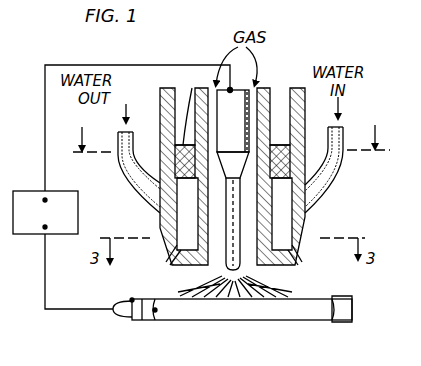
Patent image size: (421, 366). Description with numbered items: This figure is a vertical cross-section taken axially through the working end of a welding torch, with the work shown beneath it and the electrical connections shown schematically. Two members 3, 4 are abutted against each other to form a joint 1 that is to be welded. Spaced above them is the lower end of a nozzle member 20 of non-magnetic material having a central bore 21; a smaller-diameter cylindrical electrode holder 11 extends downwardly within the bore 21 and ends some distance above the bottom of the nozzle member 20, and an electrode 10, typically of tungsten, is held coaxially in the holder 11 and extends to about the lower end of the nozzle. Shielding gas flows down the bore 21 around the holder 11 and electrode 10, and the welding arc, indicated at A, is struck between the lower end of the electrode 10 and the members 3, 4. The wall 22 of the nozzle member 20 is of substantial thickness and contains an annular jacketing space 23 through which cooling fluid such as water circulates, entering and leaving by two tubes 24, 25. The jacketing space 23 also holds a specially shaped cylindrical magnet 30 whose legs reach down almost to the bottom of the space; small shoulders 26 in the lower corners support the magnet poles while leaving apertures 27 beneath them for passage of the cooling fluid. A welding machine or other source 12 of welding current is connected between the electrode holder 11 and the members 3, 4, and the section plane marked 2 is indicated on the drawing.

The joint 1 is at (333, 323).
The section line 2- 2 is at (226, 137).
The member 3 is at (245, 321).
The member 4 is at (143, 321).
The electrode 10 is at (227, 220).
The electrode holder 11 is at (235, 135).
The source of welding current 12 is at (55, 222).
The nozzle member 20 is at (159, 119).
The central bore 21 is at (273, 218).
The wall 22 is at (170, 249).
The annular jacketing space 23 is at (178, 224).
The tube 24 is at (343, 130).
The tube 25 is at (118, 135).
The shoulders 26 is at (294, 264).
The apertures 27 is at (292, 236).
The magnet 30 is at (210, 89).
The arc A is at (212, 289).